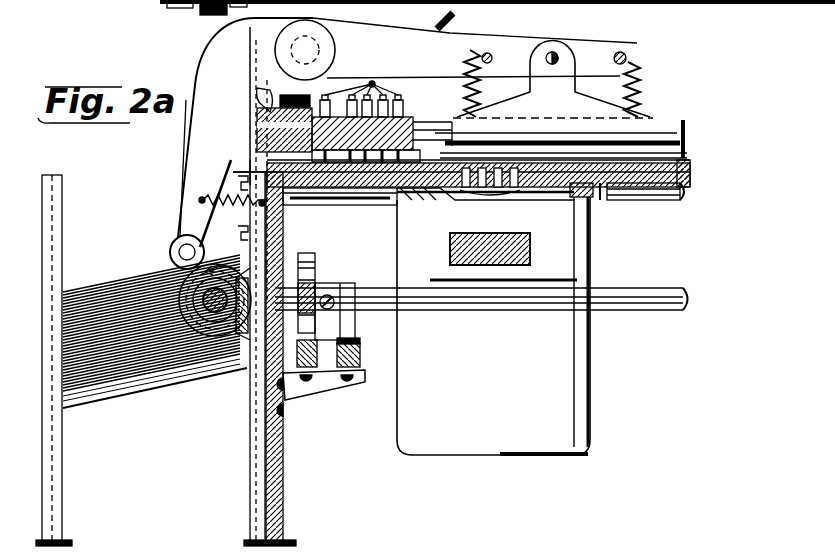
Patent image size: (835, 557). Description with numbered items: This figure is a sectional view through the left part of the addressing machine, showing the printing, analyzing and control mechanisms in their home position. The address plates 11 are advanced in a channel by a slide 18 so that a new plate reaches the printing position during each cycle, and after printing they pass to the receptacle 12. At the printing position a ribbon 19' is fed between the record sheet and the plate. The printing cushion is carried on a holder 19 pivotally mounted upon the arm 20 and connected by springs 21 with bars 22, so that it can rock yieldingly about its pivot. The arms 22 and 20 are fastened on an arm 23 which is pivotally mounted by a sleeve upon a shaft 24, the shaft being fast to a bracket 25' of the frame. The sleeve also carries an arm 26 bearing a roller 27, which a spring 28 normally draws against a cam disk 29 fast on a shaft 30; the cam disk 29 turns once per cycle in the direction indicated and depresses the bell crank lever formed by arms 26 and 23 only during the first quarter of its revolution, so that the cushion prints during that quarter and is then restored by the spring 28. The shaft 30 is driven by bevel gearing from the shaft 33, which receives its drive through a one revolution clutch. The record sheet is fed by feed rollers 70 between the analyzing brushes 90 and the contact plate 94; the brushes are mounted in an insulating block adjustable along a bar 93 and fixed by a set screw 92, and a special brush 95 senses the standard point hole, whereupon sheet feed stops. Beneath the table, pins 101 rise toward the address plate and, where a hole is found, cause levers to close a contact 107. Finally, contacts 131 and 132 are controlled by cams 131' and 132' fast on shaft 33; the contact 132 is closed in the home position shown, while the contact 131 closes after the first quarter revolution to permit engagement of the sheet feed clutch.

The address plates 11 is at (100, 292).
The receptacle 12 is at (57, 220).
The slide 18 is at (663, 122).
The holder 19 is at (553, 79).
The ribbon 19' is at (642, 201).
The arm 20 is at (552, 52).
The springs 21 is at (480, 92).
The bars 22 is at (490, 52).
The arm 23 is at (465, 42).
The shaft 24 is at (312, 47).
The bracket 25' is at (238, 63).
The arm 26 is at (192, 145).
The roller 27 is at (170, 1).
The spring 28 is at (225, 192).
The cam disk 29 is at (200, 15).
The shaft 30 is at (222, 345).
The shaft 33 is at (450, 306).
The feed rollers 70 is at (420, 125).
The analyzing brushes 90 is at (445, 186).
The set screw 92 is at (300, 105).
The bar 93 is at (268, 92).
The contact plate 94 is at (355, 200).
The analyzing brush 95 is at (340, 206).
The pins 101 is at (485, 193).
The contact 107 is at (528, 248).
The contact 131 is at (321, 392).
The cam 131' is at (329, 290).
The contact 132 is at (344, 359).
The cam 132' is at (354, 311).